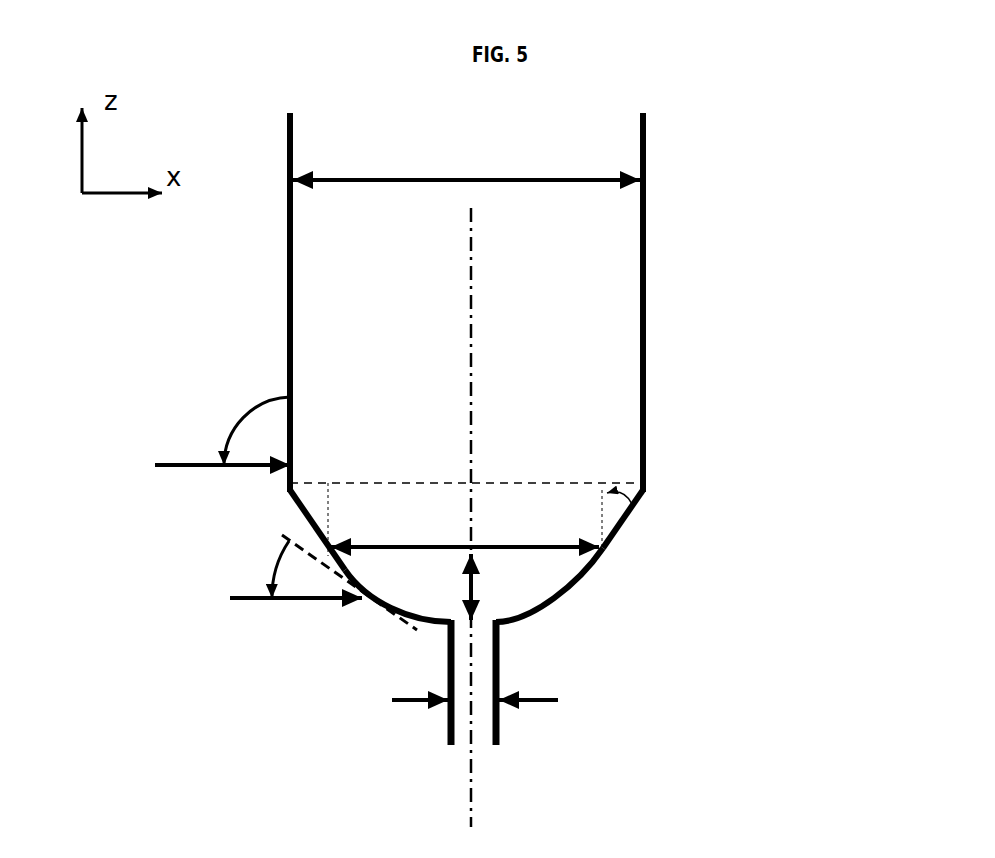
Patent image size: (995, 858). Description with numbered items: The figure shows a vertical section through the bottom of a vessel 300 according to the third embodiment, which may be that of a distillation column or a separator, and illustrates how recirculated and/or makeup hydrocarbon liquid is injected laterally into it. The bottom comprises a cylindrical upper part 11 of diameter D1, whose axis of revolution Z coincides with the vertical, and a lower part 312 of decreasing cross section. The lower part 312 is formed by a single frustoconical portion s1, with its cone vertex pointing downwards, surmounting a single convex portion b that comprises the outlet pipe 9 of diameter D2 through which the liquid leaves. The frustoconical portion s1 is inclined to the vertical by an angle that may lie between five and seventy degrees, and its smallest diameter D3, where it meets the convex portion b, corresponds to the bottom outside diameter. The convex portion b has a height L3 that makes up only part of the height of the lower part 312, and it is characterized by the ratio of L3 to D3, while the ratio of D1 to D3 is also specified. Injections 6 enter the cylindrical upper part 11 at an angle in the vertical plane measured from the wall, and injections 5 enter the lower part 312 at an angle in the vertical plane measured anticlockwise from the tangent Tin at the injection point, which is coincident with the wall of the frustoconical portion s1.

The vessel 300 is at (611, 433).
The cylindrical upper part 11 is at (644, 303).
The lower part 312 is at (611, 554).
The frustoconical portion s1 is at (630, 513).
The convex portion b is at (580, 587).
The outlet pipe 9 is at (447, 728).
The injections 6 is at (180, 462).
The injections 5 is at (267, 600).
The axis of revolution Z is at (473, 256).
The diameter of the cylindrical upper part D1 is at (466, 153).
The diameter of the outlet pipe D2 is at (491, 685).
The smallest diameter of the frustoconical portion D3 is at (465, 524).
The height of the convex portion L3 is at (446, 587).
The tangent at the injection point Tin is at (405, 628).